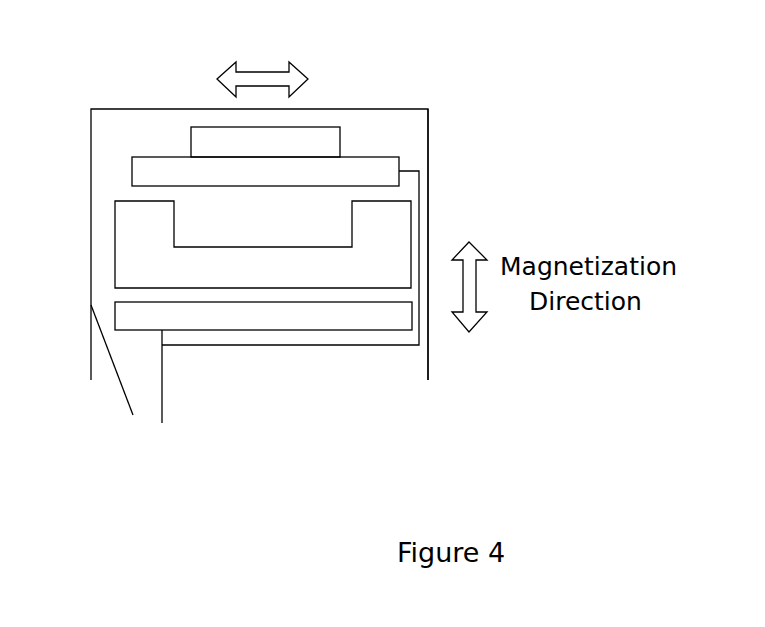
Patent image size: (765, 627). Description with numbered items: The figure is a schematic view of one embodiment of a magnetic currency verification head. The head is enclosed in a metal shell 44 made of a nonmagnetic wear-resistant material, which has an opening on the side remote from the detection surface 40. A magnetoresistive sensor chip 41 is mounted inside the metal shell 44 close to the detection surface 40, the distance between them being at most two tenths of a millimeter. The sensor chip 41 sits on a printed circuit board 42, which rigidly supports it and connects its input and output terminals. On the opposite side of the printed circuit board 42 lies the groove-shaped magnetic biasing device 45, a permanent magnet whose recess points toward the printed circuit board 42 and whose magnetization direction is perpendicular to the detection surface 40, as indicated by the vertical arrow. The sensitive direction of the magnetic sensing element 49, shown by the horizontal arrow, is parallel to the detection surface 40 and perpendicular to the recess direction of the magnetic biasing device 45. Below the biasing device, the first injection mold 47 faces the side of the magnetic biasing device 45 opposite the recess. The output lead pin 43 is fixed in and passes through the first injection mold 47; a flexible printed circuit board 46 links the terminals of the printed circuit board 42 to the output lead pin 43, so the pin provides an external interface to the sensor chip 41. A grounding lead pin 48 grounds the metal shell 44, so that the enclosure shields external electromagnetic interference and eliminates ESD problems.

The detection surface 40 is at (259, 203).
The magnetoresistive sensor chip 41 is at (283, 114).
The printed circuit board 42 is at (250, 129).
The output lead pin 43 is at (192, 376).
The metal shell 44 is at (454, 232).
The groove-shaped magnetic biasing device 45 is at (226, 230).
The flexible printed circuit board 46 is at (290, 277).
The first injection mold 47 is at (229, 290).
The grounding lead pin 48 is at (98, 364).
The sensitive direction of the magnetic sensing element 49 is at (273, 59).